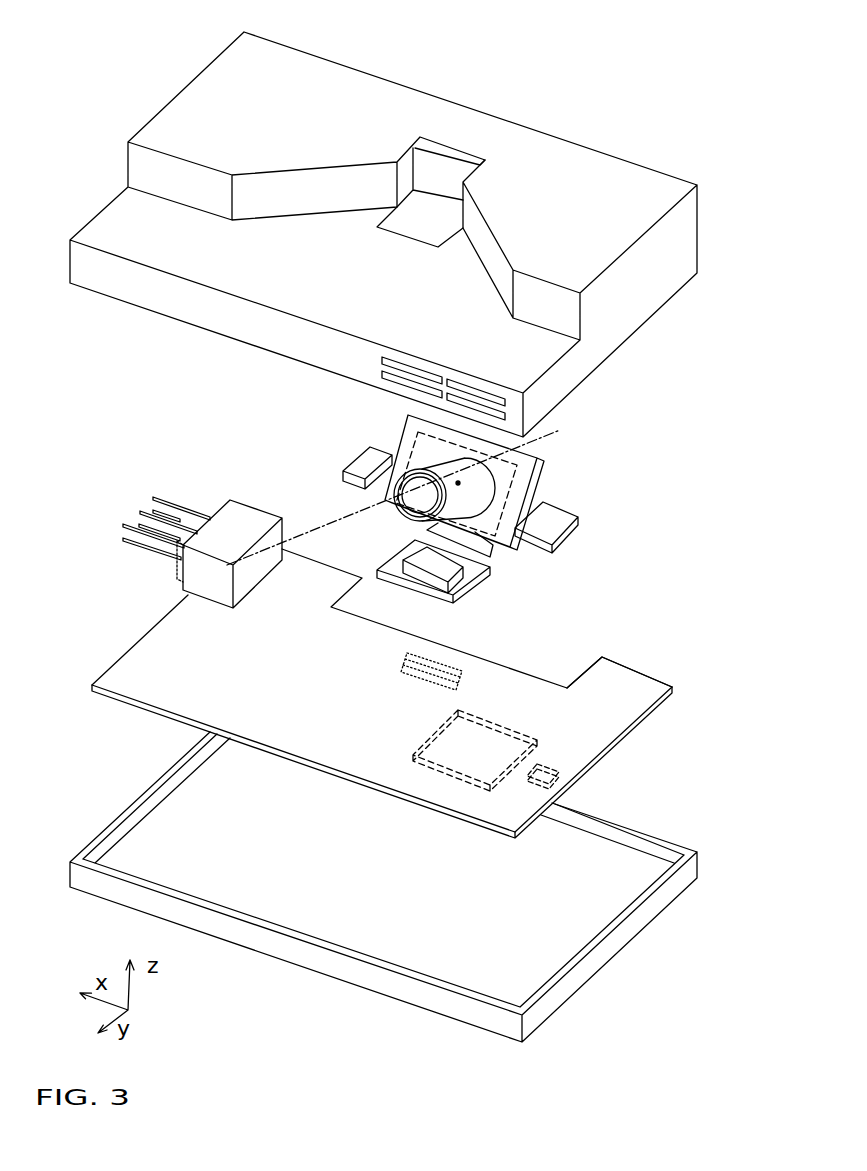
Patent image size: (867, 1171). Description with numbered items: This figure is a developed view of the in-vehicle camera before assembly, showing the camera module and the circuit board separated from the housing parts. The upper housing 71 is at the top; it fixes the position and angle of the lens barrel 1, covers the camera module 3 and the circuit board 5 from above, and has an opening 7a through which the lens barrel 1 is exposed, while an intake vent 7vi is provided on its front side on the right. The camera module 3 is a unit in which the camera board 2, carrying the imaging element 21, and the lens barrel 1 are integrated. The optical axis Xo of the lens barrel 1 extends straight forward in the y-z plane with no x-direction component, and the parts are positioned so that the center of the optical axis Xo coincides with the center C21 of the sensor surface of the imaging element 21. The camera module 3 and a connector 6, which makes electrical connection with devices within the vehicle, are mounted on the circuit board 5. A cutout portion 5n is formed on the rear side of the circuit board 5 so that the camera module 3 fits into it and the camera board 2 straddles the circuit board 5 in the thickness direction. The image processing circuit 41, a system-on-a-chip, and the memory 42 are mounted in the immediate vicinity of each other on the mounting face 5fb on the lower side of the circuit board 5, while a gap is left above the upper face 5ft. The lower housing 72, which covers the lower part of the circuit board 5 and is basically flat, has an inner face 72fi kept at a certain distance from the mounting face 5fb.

The upper housing 71 is at (390, 234).
The opening 7a is at (440, 203).
The intake vent 7vi is at (398, 372).
The camera module 3 is at (475, 504).
The imaging element 21 is at (405, 442).
The center of the sensor surface of the imaging element C21 is at (458, 483).
The camera board 2 is at (542, 462).
The lens barrel 1 is at (495, 564).
The optical axis Xo is at (393, 497).
The connector 6 is at (242, 520).
The circuit board 5 is at (380, 693).
The upper face of the circuit board 5ft is at (188, 658).
The mounting face 5fb is at (165, 720).
The cutout portion 5n is at (500, 653).
The image processing circuit 41 is at (523, 723).
The memory 42 is at (565, 772).
The lower housing 72 is at (383, 887).
The inner face of the lower housing 72fi is at (343, 912).